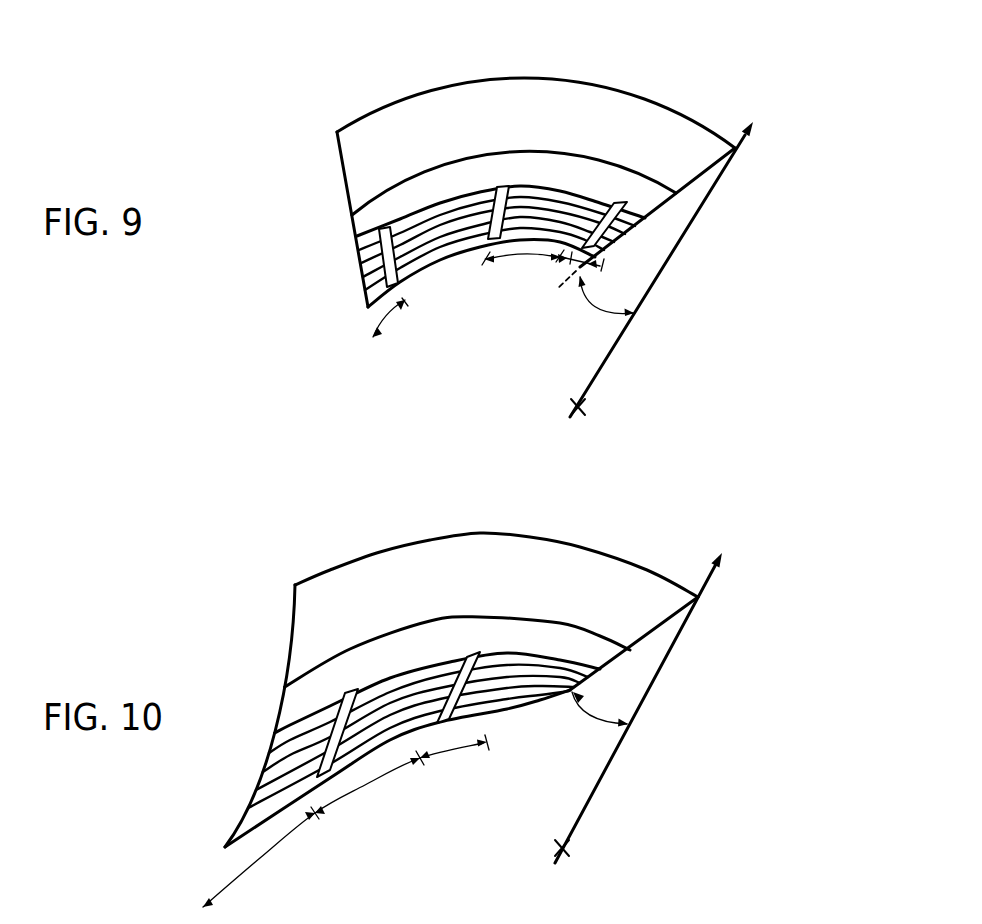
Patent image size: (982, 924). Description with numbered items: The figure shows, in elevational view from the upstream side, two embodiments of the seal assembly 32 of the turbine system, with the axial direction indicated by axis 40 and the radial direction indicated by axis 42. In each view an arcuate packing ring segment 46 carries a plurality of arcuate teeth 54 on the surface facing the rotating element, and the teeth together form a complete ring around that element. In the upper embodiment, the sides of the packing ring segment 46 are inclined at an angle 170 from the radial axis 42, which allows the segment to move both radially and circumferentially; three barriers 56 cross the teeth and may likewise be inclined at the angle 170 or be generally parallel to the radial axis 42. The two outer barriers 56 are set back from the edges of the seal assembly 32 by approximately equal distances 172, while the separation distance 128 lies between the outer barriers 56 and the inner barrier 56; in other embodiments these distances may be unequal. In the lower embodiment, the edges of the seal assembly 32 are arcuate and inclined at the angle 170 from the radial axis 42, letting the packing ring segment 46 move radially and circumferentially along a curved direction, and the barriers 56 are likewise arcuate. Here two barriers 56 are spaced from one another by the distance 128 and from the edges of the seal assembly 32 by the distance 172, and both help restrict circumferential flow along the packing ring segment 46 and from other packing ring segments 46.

In FIG. 9, the seal assembly 32 is at (733, 57).
In FIG. 10, the seal assembly 32 is at (776, 569).
In FIG. 9, the axis 40 is at (585, 407).
In FIG. 10, the axis 40 is at (569, 848).
In FIG. 9, the axis 42 is at (633, 317).
In FIG. 10, the axis 42 is at (608, 772).
In FIG. 9, the arcuate packing ring segment 46 is at (650, 205).
In FIG. 10, the arcuate packing ring segment 46 is at (613, 658).
In FIG. 9, the arcuate teeth 54 is at (425, 223).
In FIG. 10, the arcuate teeth 54 is at (430, 677).
In FIG. 9, the barriers 56 is at (382, 232).
In FIG. 10, the barriers 56 is at (351, 695).
In FIG. 9, the separation distance 128 is at (522, 258).
In FIG. 10, the separation distance 128 is at (363, 787).
In FIG. 9, the angle 170 is at (597, 283).
In FIG. 10, the angle 170 is at (597, 713).
In FIG. 9, the distance 172 is at (385, 327).
In FIG. 10, the distance 172 is at (250, 860).